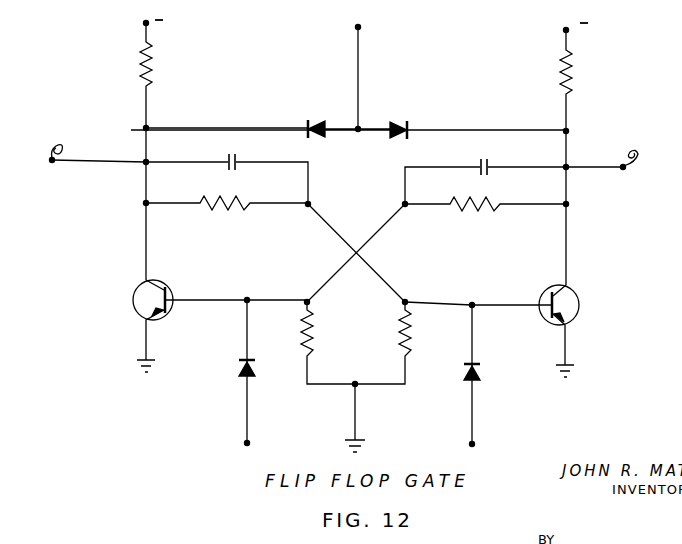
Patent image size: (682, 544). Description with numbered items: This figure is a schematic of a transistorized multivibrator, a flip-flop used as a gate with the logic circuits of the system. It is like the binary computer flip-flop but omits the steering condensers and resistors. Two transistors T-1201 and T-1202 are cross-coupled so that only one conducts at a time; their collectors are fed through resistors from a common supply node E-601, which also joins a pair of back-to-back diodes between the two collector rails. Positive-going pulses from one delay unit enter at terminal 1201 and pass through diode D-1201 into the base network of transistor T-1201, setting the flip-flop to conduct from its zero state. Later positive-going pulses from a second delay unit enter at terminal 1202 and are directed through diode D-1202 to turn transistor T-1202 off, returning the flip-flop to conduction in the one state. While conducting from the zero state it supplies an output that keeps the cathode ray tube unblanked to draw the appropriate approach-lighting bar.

The supply voltage terminal E-601 is at (360, 29).
The transistor T-1201 is at (172, 291).
The transistor T-1202 is at (576, 300).
The diode D-1201 is at (240, 366).
The diode D-1202 is at (478, 372).
The terminal 1201 is at (249, 443).
The terminal 1202 is at (474, 446).